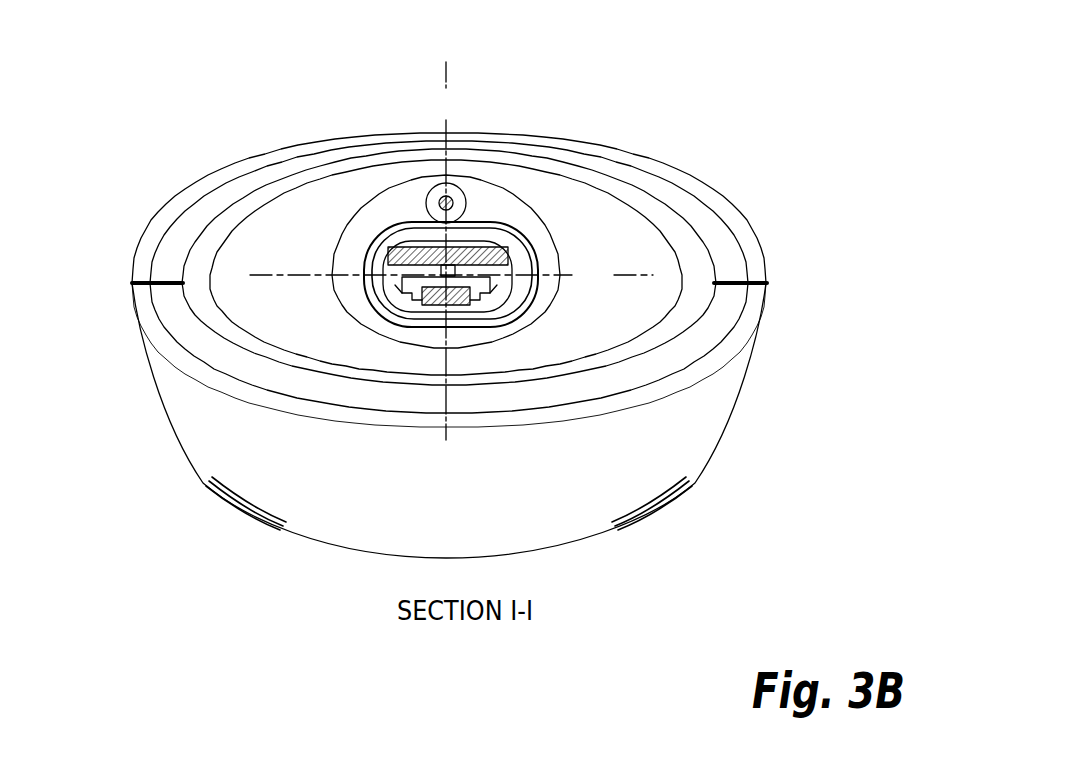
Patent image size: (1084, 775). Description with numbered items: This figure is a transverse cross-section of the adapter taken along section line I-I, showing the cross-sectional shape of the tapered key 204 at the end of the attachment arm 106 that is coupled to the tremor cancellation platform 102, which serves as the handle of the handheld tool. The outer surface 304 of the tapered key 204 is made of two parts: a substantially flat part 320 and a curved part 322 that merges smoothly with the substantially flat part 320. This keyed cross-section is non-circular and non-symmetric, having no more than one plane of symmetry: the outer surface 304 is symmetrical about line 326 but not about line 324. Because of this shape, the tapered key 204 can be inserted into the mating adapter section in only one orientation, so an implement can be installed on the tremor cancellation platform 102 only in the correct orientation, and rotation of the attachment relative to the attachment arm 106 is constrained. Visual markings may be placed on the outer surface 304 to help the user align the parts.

The tremor cancellation platform 102 is at (449, 345).
The attachment arm 106 is at (442, 284).
The tapered key 204 is at (538, 292).
The outer surface 304 is at (535, 238).
The substantially flat part 320 is at (398, 222).
The curved part 322 is at (330, 284).
The line 324 is at (451, 275).
The line 326 is at (443, 251).